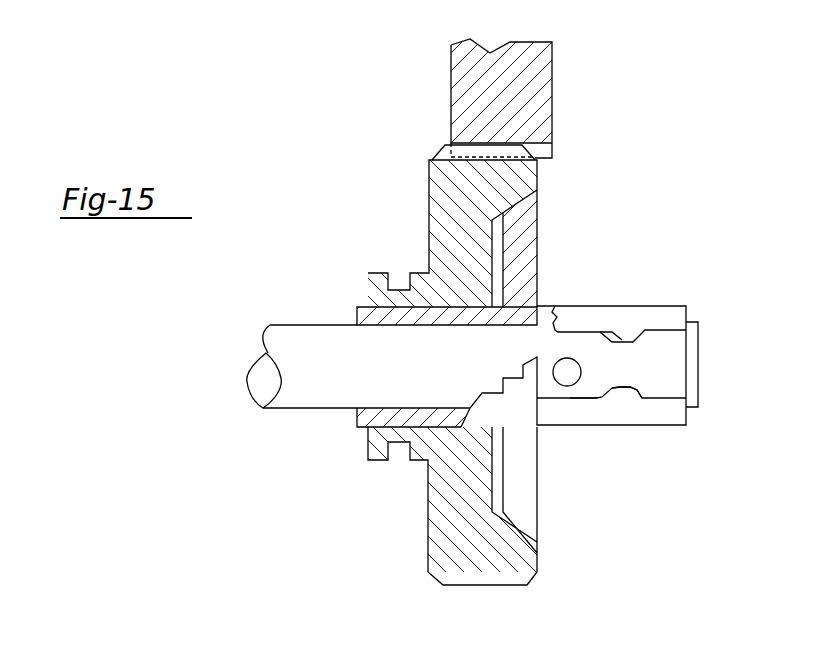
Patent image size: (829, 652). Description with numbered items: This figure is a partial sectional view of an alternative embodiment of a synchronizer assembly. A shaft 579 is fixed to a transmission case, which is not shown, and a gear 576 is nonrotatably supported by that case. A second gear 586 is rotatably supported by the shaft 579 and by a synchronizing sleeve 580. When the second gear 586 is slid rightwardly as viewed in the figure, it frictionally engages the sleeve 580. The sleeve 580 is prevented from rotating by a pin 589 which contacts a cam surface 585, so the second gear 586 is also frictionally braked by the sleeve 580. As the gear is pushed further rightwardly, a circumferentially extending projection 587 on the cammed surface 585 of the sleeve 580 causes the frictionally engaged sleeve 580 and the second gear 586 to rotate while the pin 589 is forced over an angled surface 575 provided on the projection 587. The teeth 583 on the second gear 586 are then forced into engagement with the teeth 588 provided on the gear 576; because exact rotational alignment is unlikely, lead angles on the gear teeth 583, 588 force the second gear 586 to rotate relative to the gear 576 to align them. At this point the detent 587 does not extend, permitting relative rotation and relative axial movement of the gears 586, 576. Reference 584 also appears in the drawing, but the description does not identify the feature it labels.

The angled surface 575 is at (637, 392).
The gear 576 is at (530, 92).
The shaft 579 is at (310, 398).
The synchronizing sleeve 580 is at (537, 253).
The teeth 583 is at (445, 156).
The lower groove 584 is at (593, 399).
The cam surface 585 is at (697, 425).
The second gear 586 is at (429, 218).
The circumferentially extending projection 587 is at (622, 395).
The teeth 588 is at (543, 150).
The pin 589 is at (570, 386).